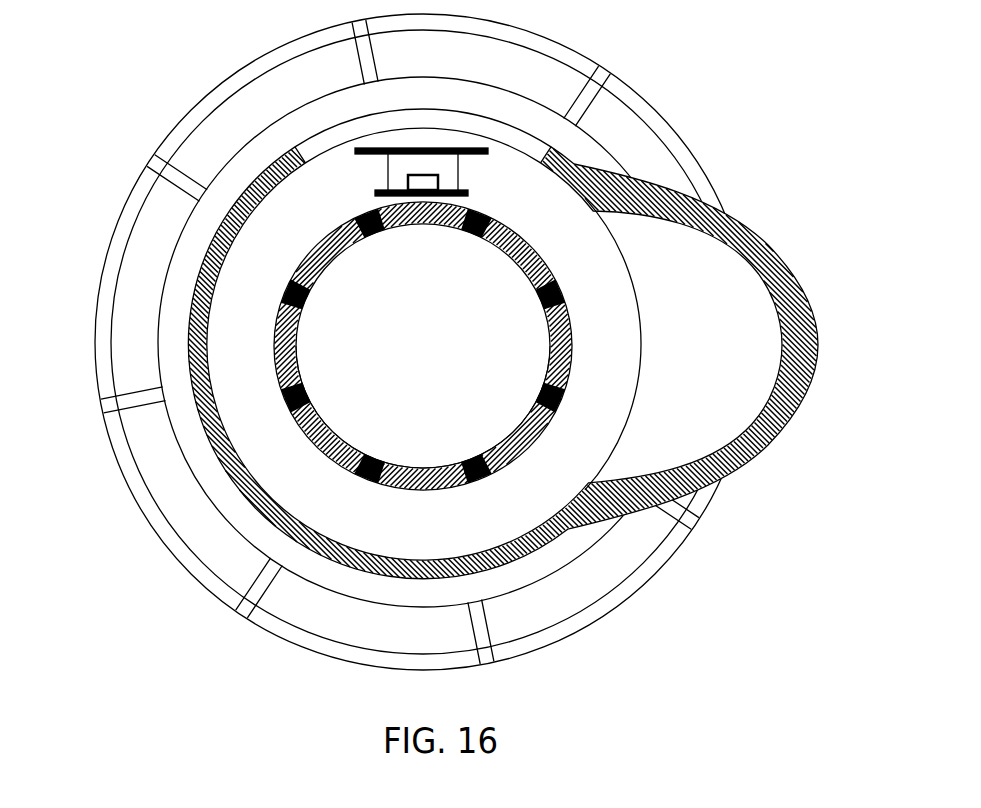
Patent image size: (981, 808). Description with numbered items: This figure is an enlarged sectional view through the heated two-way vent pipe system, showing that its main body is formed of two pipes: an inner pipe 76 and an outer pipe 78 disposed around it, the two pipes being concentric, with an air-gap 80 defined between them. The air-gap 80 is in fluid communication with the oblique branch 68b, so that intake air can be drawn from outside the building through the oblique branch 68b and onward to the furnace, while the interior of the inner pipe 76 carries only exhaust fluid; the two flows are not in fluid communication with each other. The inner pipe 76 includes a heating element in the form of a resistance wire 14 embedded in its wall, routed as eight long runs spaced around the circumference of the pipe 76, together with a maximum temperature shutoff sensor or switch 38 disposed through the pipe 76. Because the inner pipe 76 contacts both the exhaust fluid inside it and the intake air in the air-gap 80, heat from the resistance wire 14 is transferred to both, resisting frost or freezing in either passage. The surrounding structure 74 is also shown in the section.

The resistance wire 14 is at (283, 290).
The maximum temperature shutoff sensor 38 is at (440, 162).
The oblique branch 68b is at (790, 268).
The outer ring frame 74 is at (103, 300).
The inner pipe 76 is at (420, 470).
The outer pipe 78 is at (548, 548).
The air-gap 80 is at (615, 257).